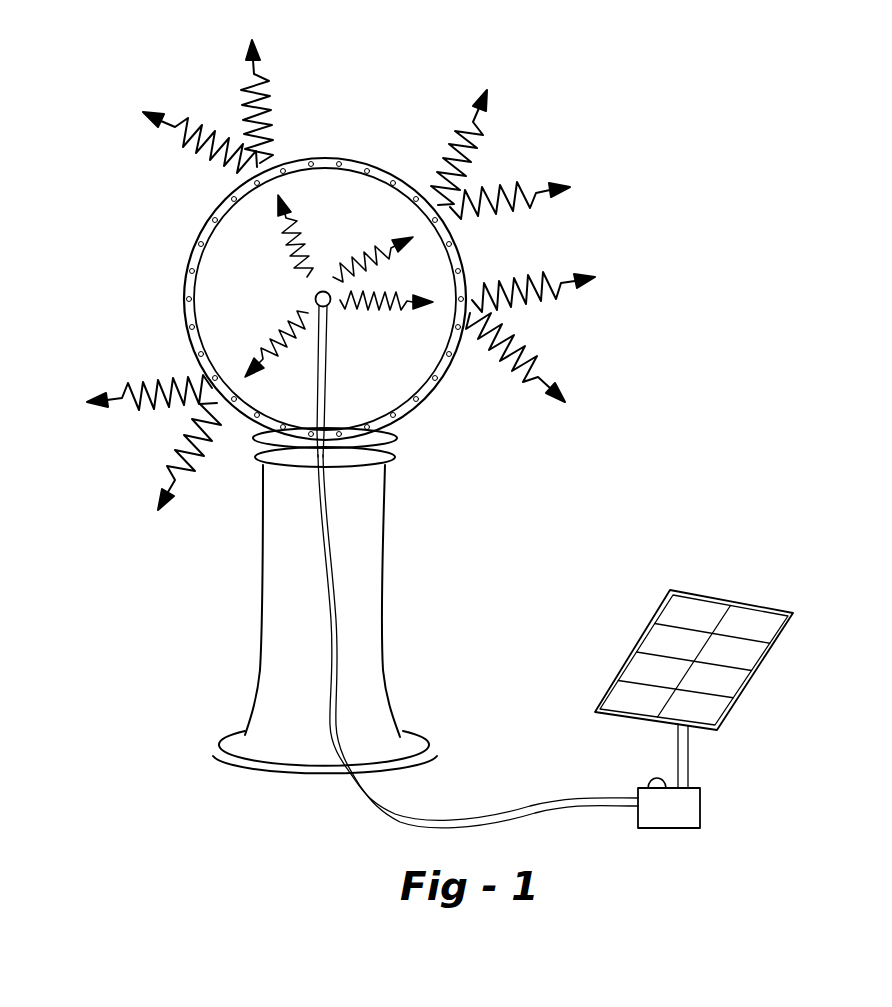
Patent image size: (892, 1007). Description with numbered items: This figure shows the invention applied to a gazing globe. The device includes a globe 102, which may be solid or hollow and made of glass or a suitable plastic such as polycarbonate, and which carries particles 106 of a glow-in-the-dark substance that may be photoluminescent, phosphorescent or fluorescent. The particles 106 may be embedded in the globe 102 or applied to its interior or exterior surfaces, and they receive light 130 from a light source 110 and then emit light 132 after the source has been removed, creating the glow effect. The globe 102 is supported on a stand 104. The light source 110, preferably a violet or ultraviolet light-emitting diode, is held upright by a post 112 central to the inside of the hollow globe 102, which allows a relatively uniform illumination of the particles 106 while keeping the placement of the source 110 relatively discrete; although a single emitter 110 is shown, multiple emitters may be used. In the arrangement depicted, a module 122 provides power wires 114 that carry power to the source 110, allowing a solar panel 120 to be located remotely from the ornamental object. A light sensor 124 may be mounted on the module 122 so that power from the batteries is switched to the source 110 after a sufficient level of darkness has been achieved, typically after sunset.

The globe 102 is at (245, 245).
The stand 104 is at (292, 608).
The particles 106 is at (187, 290).
The light source 110 is at (315, 298).
The post 112 is at (328, 372).
The power wires 114 is at (478, 641).
The solar panel 120 is at (687, 608).
The module 122 is at (688, 812).
The light sensor 124 is at (655, 776).
The light 130 is at (339, 286).
The light 132 is at (341, 275).